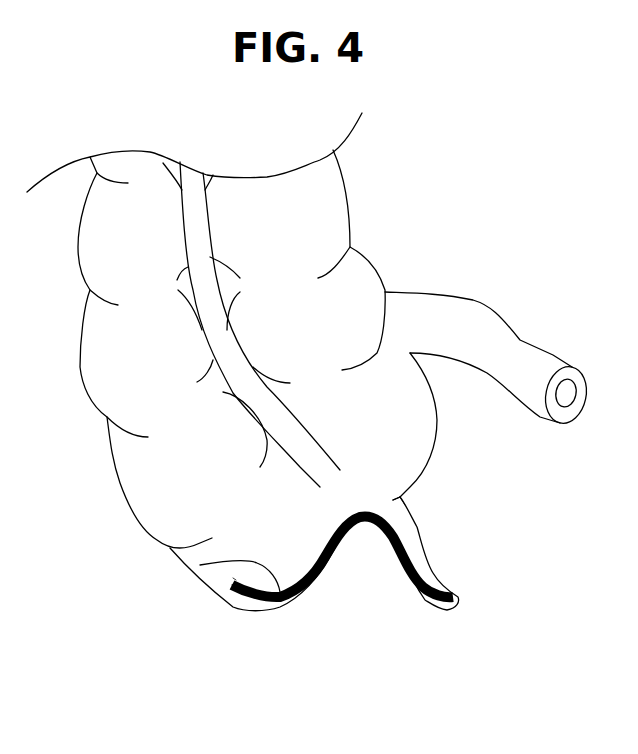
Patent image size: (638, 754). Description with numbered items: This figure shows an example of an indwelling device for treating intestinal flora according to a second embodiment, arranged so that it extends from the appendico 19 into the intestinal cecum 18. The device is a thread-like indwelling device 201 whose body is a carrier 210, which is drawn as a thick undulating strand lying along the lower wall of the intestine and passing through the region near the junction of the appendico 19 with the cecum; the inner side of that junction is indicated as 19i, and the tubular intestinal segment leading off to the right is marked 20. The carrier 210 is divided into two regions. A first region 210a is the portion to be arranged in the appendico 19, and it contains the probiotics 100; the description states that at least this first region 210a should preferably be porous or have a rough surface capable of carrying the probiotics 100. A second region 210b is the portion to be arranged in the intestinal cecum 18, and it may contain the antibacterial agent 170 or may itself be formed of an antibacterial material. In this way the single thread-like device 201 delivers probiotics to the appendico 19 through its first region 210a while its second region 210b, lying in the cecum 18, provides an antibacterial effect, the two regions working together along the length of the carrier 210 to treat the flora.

The intestinal cecum 18 is at (200, 565).
The appendico 19 is at (433, 585).
The inner side of fold 19i is at (383, 503).
The duodenum 20 is at (497, 337).
The probiotics 100 is at (432, 602).
The antibacterial agent 170 is at (233, 577).
The thread-like indwelling device for treating flora 201 is at (237, 597).
The carrier 210 is at (260, 597).
The first region 210a is at (478, 584).
The second region 210b is at (376, 537).